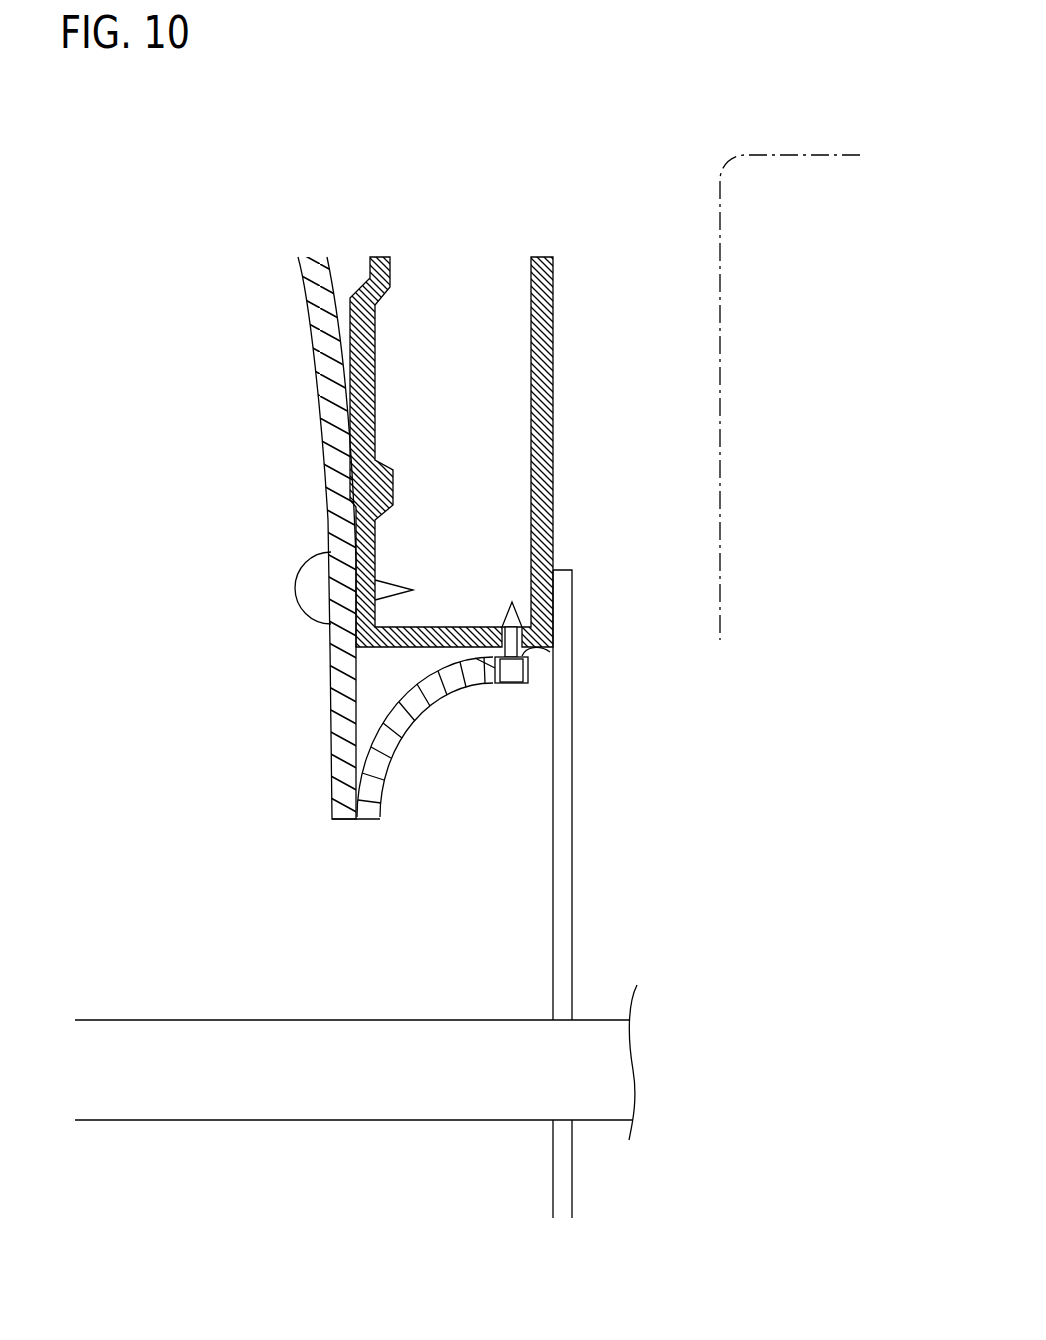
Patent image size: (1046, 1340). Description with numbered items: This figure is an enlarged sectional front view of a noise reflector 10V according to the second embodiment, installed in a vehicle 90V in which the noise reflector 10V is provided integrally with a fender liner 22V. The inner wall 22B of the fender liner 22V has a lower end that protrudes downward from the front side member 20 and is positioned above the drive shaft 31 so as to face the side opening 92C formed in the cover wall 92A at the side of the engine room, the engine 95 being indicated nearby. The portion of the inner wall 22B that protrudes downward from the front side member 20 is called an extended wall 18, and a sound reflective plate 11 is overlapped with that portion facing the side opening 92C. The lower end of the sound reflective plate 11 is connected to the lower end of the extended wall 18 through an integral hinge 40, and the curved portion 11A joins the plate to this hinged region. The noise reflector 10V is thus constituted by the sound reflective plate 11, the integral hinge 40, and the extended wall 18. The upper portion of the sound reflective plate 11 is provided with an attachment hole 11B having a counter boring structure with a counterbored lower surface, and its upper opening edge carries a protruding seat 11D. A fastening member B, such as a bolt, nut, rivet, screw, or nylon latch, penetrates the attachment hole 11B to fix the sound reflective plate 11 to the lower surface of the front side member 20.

The noise reflector 10V is at (263, 665).
The sound reflective plate 11 is at (460, 680).
The curved wall portion 11A is at (387, 790).
The attachment hole 11B is at (528, 670).
The protruding seat 11D is at (476, 657).
The extended wall 18 is at (343, 736).
The front side member 20 is at (553, 338).
The inner wall 22B is at (323, 292).
The fender liner 22V is at (312, 408).
The drive shaft 31 is at (292, 1090).
The integral hinge 40 is at (357, 819).
The vehicle 90V is at (225, 225).
The cover wall 92A is at (574, 588).
The side opening 92C is at (573, 912).
The engine 95 is at (785, 154).
The fastening member B is at (297, 587).